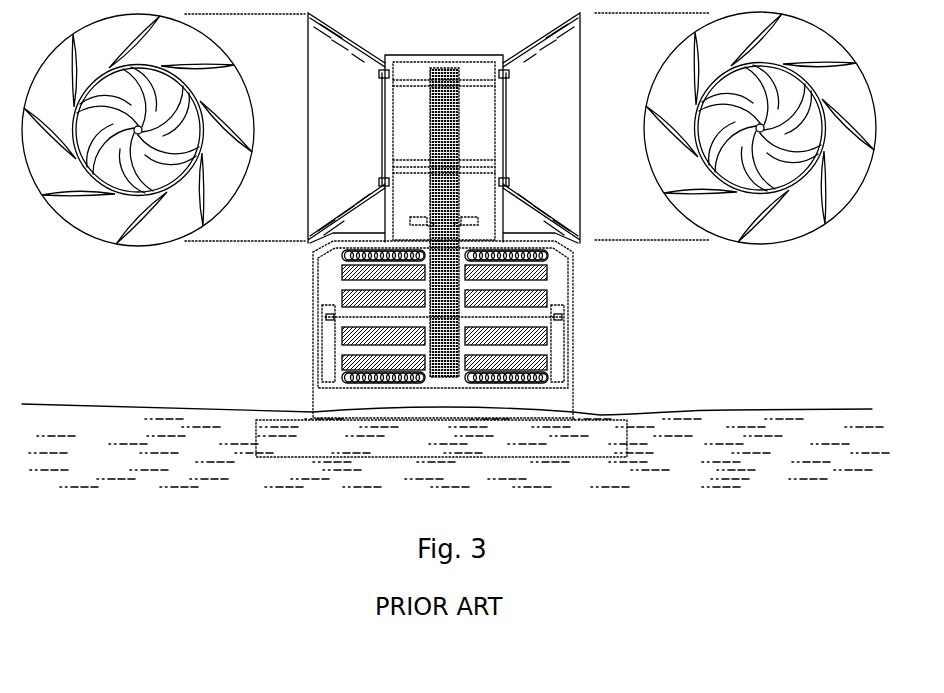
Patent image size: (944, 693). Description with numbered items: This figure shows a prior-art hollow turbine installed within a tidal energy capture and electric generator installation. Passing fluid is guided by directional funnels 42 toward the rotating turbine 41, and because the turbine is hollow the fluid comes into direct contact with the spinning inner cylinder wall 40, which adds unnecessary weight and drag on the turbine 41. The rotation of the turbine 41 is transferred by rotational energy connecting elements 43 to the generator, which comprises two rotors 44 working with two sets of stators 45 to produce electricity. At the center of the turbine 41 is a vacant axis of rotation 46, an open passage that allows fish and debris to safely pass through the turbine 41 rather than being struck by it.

The inner cylinder wall 40 is at (138, 130).
The turbine 41 is at (138, 130).
The directional funnels 42 is at (96, 40).
The rotational energy connecting elements 43 is at (455, 223).
The rotors 44 is at (397, 309).
The sets of stators 45 is at (559, 273).
The vacant axis of rotation 46 is at (780, 118).